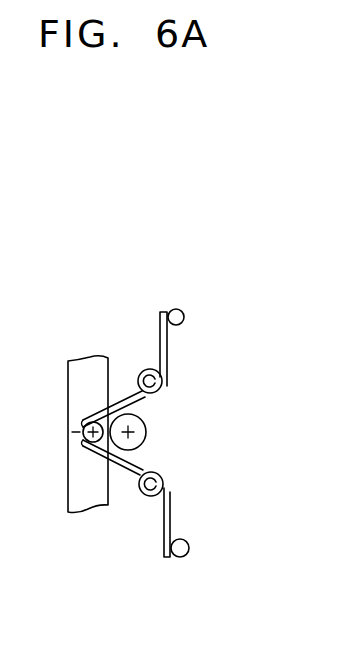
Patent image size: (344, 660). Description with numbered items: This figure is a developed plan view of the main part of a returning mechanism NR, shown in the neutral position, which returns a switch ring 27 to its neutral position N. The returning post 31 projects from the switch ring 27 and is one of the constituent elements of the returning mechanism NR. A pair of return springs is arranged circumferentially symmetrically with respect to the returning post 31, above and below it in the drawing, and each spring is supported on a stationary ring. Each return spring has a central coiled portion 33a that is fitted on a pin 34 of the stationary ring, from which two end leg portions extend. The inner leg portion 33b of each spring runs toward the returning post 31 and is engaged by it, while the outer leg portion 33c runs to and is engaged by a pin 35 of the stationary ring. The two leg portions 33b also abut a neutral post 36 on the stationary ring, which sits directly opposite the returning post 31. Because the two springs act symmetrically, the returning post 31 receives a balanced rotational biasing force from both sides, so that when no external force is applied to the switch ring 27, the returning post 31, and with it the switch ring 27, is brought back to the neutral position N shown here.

The returning mechanism NR is at (192, 263).
The switch ring 27 is at (68, 478).
The returning post 31 is at (86, 425).
The neutral position N is at (55, 431).
The neutral post 36 is at (147, 424).
The leg portion 33b is at (100, 417).
The pin 34 is at (162, 380).
The central coiled portion 33a is at (143, 371).
The leg portion 33c is at (168, 350).
The pin 35 is at (184, 315).